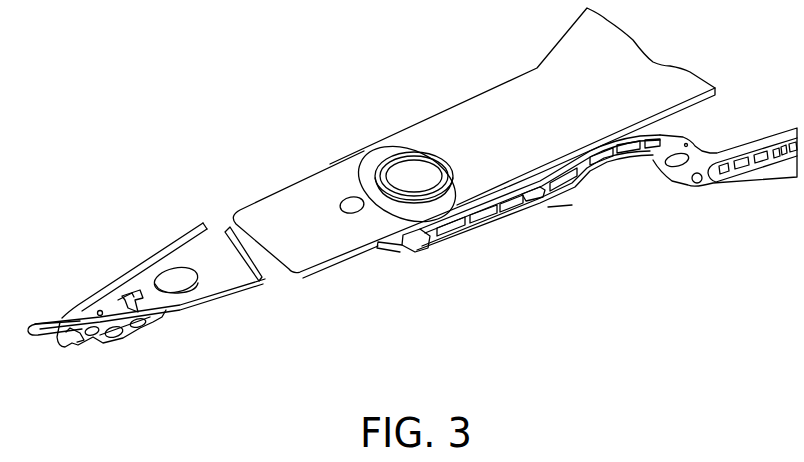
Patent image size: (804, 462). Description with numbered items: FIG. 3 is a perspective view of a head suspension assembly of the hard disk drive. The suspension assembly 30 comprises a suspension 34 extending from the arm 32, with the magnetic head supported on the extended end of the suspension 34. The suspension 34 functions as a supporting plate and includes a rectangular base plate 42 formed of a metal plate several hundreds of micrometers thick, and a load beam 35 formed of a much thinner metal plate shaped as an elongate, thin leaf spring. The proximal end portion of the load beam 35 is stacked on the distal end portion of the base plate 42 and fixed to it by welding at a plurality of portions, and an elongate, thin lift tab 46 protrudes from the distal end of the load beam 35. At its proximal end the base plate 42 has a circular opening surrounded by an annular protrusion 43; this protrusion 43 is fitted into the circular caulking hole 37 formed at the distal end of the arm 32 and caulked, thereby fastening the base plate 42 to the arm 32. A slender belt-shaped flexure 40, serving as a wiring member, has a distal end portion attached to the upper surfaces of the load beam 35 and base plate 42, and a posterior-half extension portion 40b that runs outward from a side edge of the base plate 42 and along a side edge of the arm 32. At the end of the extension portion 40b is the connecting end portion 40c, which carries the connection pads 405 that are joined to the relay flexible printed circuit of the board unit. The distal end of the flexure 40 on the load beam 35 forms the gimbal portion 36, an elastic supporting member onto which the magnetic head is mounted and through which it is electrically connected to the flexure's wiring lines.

The suspension assembly 30 is at (240, 189).
The arm 32 is at (551, 72).
The suspension 34 is at (315, 292).
The load beam 35 is at (132, 292).
The gimbal portion 36 is at (78, 338).
The caulking hole 37 is at (438, 183).
The flexure 40 is at (484, 242).
The posterior-half portion 40b is at (543, 208).
The connecting end portion 40c is at (743, 177).
The base plate 42 is at (322, 188).
The annular protrusion 43 is at (383, 167).
The lift tab 46 is at (38, 327).
The connection pads 405 is at (722, 165).